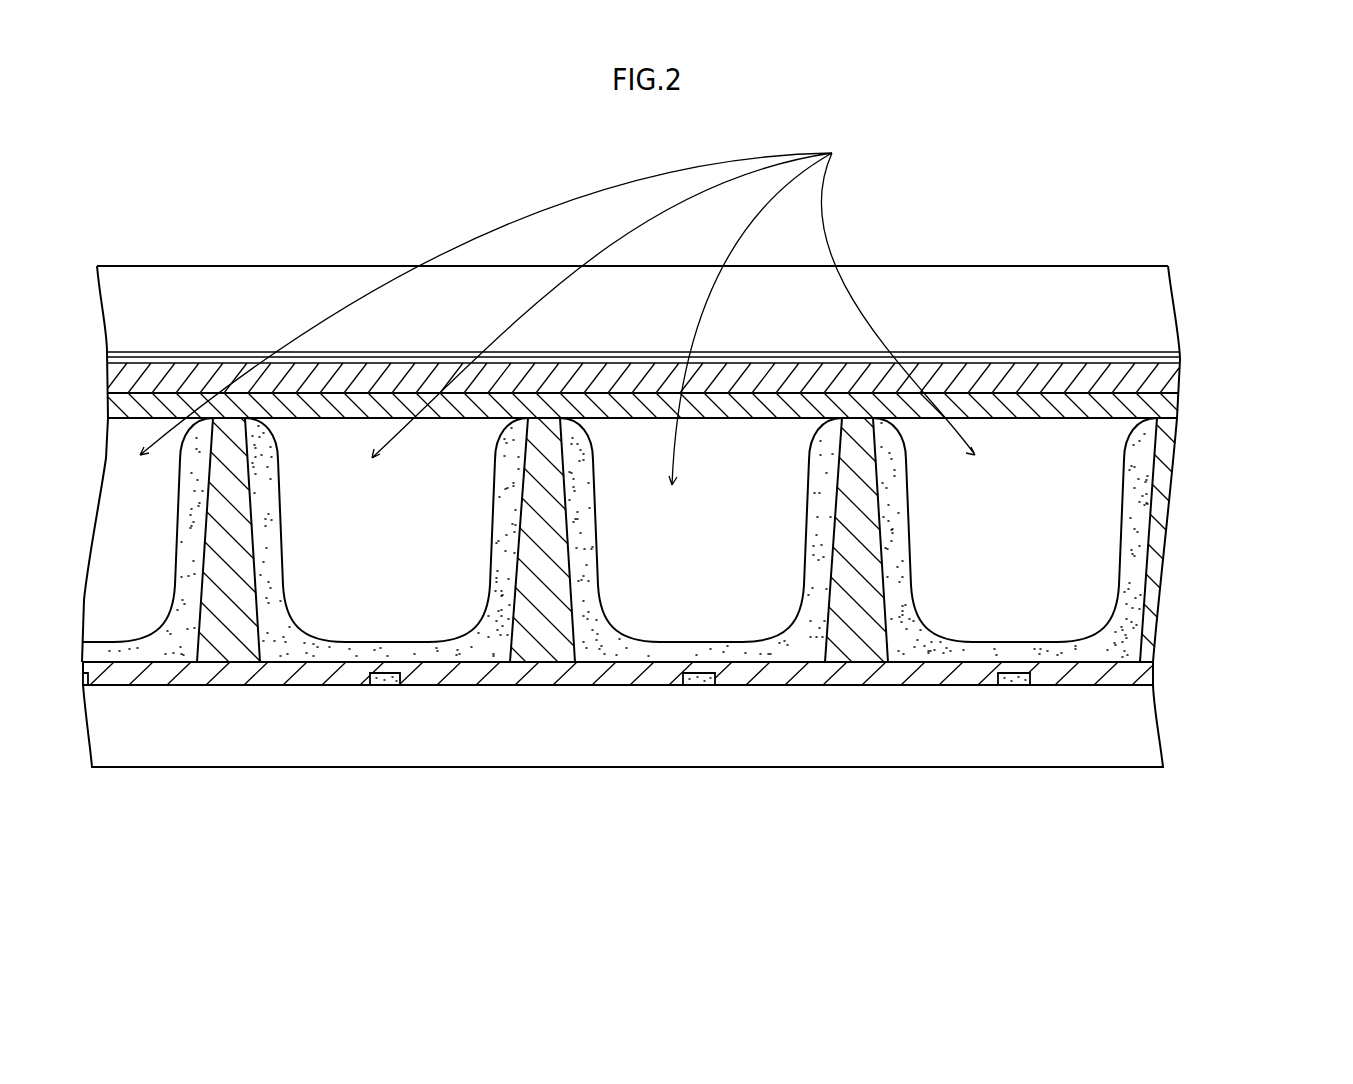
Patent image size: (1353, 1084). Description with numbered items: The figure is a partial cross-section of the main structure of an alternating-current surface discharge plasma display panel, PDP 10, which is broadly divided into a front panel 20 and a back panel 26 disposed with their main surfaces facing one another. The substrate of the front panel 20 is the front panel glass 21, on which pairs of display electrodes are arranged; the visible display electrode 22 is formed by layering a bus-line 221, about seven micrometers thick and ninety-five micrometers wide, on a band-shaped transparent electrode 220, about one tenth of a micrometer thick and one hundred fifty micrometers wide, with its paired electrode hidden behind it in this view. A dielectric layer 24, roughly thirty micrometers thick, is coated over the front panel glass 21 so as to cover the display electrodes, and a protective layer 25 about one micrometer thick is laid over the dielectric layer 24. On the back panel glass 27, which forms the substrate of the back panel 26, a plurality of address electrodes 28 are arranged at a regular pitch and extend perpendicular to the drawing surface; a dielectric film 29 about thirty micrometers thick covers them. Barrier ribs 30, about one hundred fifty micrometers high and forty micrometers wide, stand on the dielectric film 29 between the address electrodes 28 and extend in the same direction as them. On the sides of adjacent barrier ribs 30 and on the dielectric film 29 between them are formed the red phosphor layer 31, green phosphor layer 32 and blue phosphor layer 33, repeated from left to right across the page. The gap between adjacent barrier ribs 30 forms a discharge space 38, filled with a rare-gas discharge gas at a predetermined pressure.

The PDP 10 is at (937, 172).
The front panel 20 is at (1136, 243).
The front panel glass 21 is at (1163, 282).
The display electrode 22 is at (726, 333).
The transparent electrode 220 is at (1180, 357).
The bus-line 221 is at (1180, 363).
The dielectric layer 24 is at (1182, 380).
The protective layer 25 is at (1182, 407).
The back panel 26 is at (971, 889).
The back panel glass 27 is at (1145, 717).
The address electrode 28 is at (92, 687).
The dielectric film 29 is at (1145, 673).
The barrier rib 30 is at (227, 653).
The red phosphor layer 31 is at (452, 653).
The green phosphor layer 32 is at (737, 650).
The blue phosphor layer 33 is at (1053, 650).
The discharge space 38 is at (557, 311).